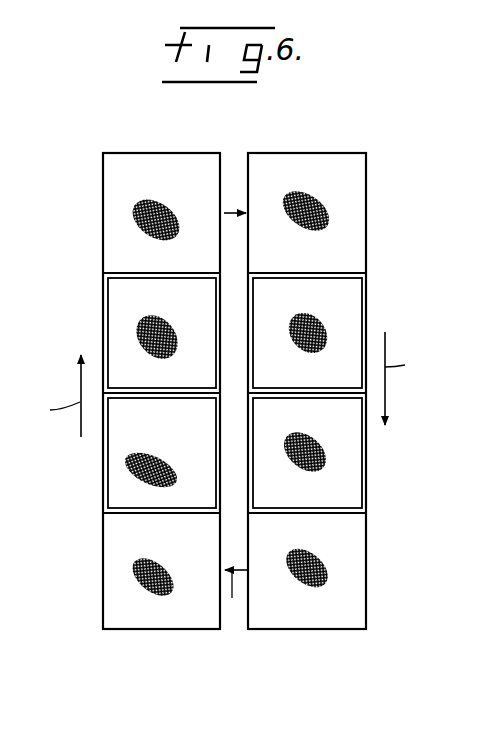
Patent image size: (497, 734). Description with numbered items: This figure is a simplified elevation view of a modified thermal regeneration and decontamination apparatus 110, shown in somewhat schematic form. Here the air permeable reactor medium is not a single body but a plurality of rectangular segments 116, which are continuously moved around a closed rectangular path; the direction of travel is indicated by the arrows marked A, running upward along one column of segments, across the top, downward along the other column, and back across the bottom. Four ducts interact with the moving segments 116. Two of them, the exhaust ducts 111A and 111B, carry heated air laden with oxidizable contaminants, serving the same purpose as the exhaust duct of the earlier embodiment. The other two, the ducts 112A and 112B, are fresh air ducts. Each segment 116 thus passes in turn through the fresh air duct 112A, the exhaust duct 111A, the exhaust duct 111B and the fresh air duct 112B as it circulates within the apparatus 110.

The thermal regeneration and decontamination apparatus 110 is at (272, 138).
The rectangular segments 116 is at (105, 218).
The fresh air duct 112A is at (108, 314).
The exhaust duct 111A is at (105, 480).
The exhaust duct 111B is at (365, 300).
The fresh air duct 112B is at (362, 482).